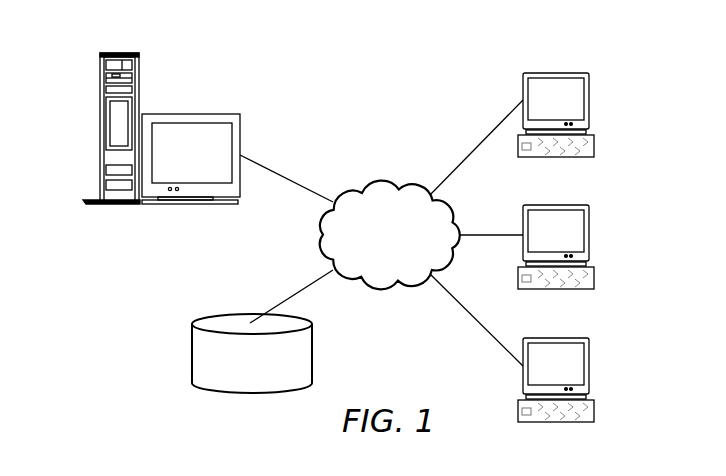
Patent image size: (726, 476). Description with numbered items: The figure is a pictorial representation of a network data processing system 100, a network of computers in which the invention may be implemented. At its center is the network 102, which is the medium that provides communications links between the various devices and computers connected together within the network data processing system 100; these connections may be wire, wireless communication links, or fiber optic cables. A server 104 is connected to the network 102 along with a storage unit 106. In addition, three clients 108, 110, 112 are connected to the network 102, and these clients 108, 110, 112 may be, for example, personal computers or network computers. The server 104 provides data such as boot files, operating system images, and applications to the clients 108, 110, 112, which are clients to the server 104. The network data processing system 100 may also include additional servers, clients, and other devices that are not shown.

The network data processing system 100 is at (439, 77).
The network 102 is at (363, 190).
The server 104 is at (100, 128).
The storage unit 106 is at (192, 352).
The client 108 is at (590, 100).
The client 110 is at (590, 232).
The client 112 is at (590, 368).